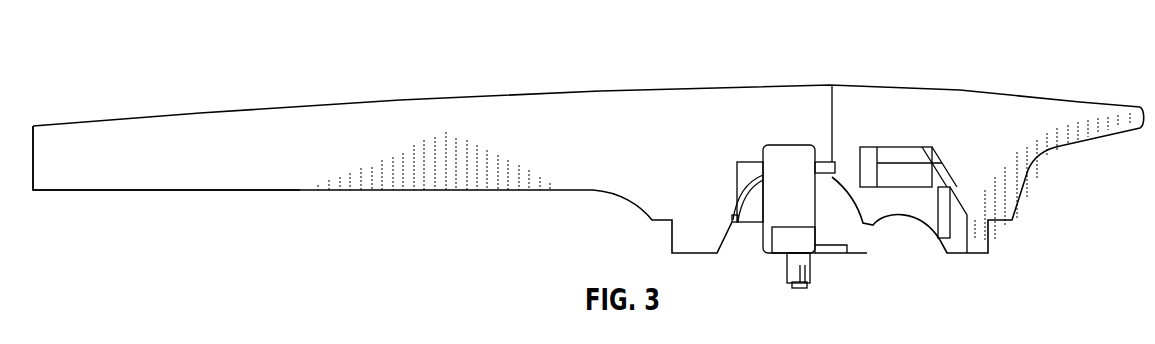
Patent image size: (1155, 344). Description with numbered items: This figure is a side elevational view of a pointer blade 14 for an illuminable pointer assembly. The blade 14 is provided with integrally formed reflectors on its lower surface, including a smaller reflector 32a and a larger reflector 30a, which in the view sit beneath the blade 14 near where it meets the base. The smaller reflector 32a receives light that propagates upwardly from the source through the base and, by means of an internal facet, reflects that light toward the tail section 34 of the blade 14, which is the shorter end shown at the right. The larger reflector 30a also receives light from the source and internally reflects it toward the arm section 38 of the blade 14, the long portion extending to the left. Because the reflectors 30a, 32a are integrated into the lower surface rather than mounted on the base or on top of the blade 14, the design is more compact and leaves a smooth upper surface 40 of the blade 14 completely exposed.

The blade 14 is at (98, 46).
The arm section 38 is at (183, 135).
The smooth upper surface 40 is at (235, 105).
The tail section 34 is at (1005, 112).
The smaller reflector 32a is at (730, 216).
The larger reflector 30a is at (850, 232).